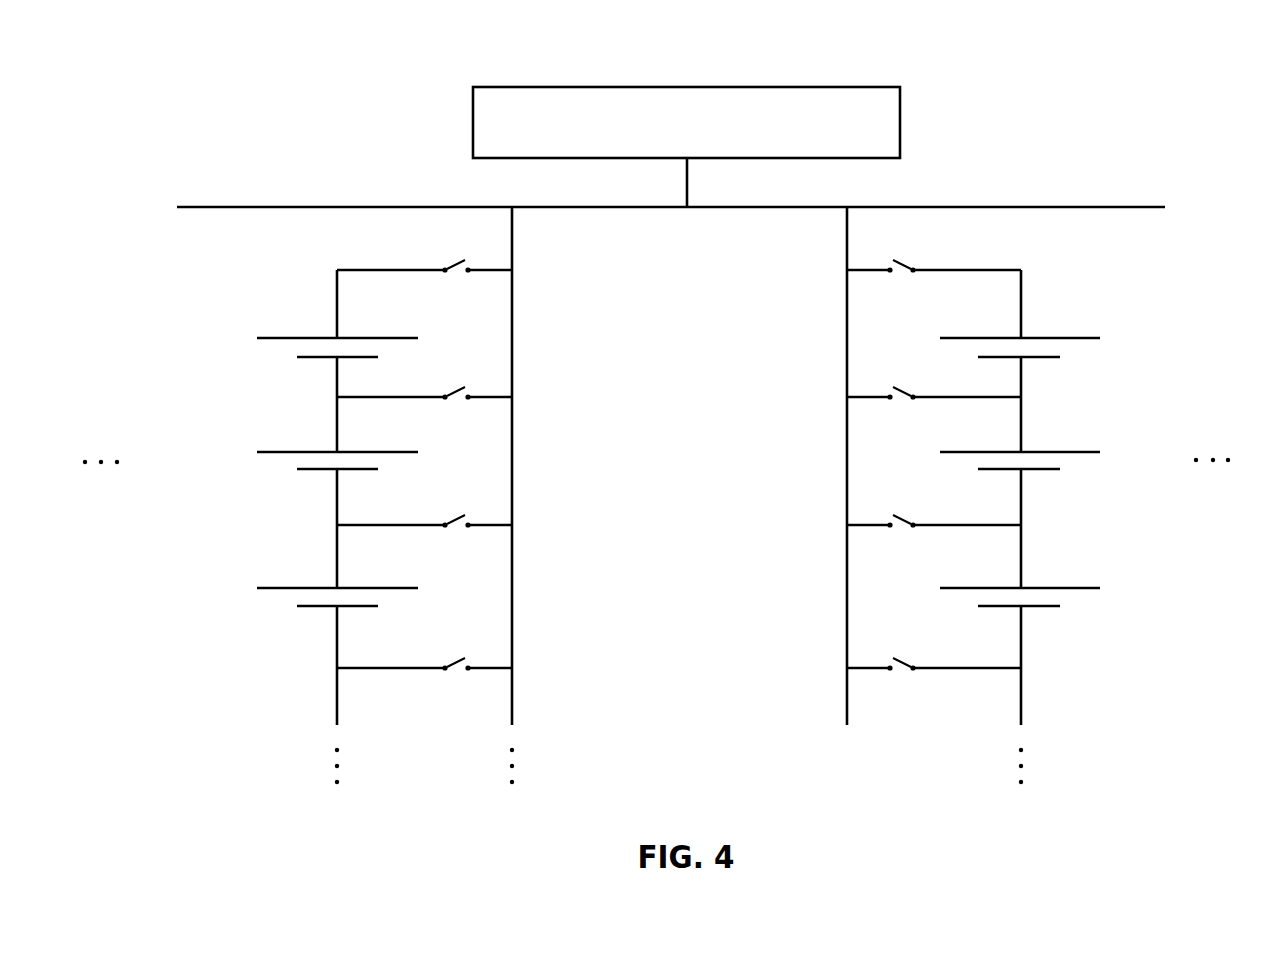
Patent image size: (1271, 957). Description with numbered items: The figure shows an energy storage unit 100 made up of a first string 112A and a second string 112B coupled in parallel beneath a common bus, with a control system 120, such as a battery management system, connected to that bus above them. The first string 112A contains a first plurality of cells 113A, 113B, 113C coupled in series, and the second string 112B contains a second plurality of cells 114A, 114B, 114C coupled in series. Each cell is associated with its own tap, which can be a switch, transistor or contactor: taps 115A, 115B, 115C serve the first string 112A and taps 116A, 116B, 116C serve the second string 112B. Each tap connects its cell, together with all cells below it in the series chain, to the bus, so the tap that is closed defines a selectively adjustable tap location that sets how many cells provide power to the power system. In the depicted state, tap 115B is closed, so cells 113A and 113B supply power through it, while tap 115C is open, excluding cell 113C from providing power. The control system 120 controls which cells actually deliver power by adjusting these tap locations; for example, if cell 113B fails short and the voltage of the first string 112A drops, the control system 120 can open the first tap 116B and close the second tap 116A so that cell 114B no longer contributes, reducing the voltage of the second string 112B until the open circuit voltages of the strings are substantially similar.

The battery system 100 is at (320, 74).
The control system 120 is at (805, 87).
The first string 112A is at (336, 703).
The second string 112B is at (846, 708).
The cell 113A is at (270, 569).
The cell 113B is at (270, 427).
The cell 113C is at (270, 312).
The cell 114A is at (1088, 569).
The cell 114B is at (1088, 431).
The cell 114C is at (1088, 312).
The tap 115A is at (465, 511).
The tap 115B is at (465, 384).
The tap 115C is at (440, 258).
The second tap 116A is at (900, 509).
The first tap 116B is at (900, 381).
The tap 116C is at (910, 257).